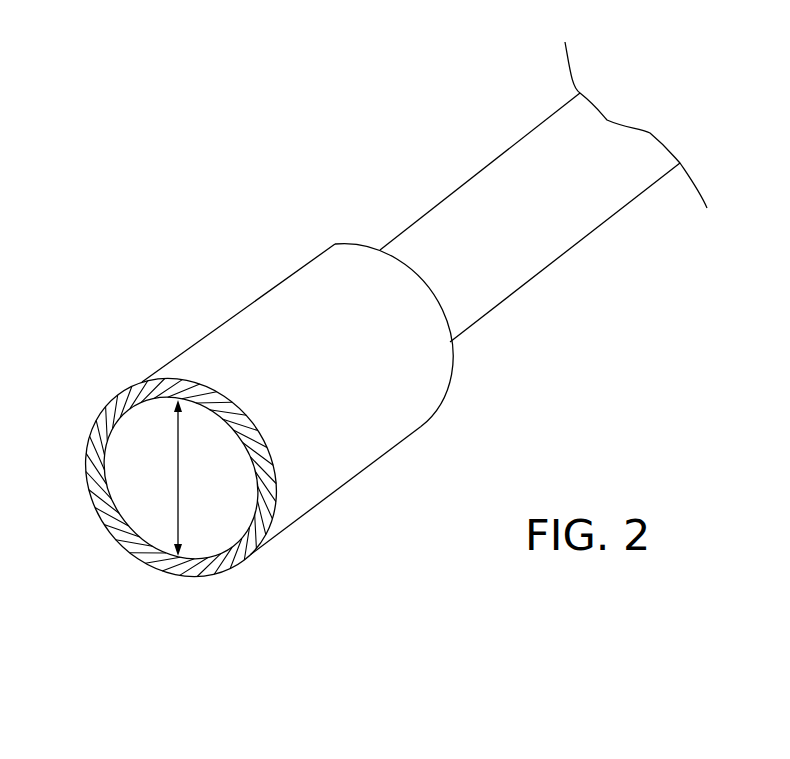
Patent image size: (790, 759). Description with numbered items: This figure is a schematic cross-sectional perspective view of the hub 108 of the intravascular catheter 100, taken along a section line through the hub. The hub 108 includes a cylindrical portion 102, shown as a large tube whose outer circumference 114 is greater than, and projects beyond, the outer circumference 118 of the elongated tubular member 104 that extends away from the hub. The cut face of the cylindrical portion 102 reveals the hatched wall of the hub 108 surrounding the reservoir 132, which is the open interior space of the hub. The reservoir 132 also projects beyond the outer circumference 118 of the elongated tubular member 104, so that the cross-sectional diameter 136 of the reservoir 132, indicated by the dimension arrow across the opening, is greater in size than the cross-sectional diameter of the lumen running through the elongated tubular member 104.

The intravascular catheter 100 is at (402, 107).
The cylindrical portion 102 is at (300, 518).
The elongated tubular member 104 is at (547, 237).
The hub 108 is at (102, 511).
The outer circumference 114 is at (350, 442).
The outer circumference 118 is at (485, 283).
The reservoir 132 is at (158, 456).
The cross-sectional diameter 136 is at (180, 478).